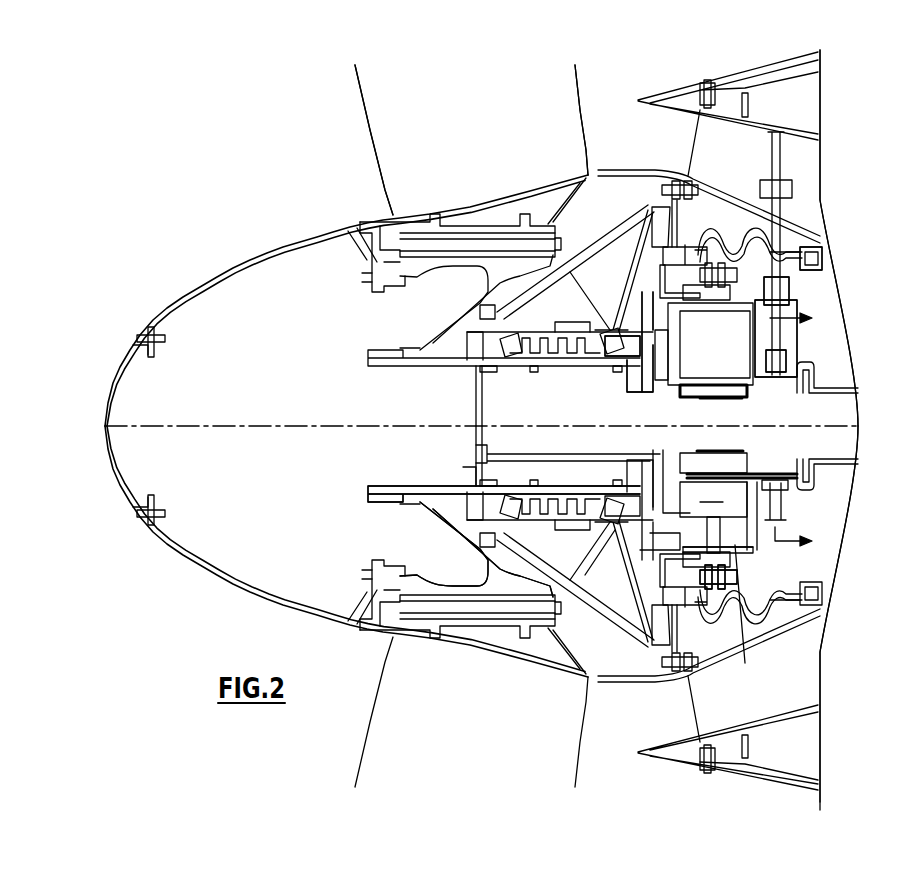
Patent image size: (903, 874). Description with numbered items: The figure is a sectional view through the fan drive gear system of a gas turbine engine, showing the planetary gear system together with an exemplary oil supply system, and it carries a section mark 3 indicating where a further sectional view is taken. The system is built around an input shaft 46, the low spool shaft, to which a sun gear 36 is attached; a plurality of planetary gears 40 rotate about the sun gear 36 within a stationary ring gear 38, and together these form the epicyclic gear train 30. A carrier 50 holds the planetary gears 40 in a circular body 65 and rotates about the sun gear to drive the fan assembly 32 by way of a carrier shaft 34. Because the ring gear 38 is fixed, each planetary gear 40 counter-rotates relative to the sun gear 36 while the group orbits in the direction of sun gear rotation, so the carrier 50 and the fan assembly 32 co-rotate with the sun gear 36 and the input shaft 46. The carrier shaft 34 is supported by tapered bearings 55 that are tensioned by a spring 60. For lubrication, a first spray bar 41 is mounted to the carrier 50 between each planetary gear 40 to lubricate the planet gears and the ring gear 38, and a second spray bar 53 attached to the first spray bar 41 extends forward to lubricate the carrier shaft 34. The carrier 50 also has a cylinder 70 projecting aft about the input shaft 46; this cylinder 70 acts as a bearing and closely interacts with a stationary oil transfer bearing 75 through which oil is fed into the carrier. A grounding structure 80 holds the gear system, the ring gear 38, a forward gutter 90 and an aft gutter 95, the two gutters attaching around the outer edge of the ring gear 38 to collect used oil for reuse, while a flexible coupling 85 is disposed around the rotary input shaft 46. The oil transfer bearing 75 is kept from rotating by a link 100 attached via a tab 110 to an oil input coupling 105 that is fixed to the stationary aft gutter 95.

The section line 3 is at (797, 431).
The epicyclic gear train 30 is at (648, 406).
The fan assembly 32 is at (480, 160).
The carrier shaft 34 is at (553, 493).
The sun gear 36 is at (700, 460).
The ring gear 38 is at (745, 663).
The planetary gears 40 is at (665, 352).
The first spray bar 41 is at (742, 488).
The input shaft 46 is at (840, 410).
The carrier 50 is at (640, 314).
The second spray bar 53 is at (572, 455).
The tapered bearings 55 is at (490, 562).
The spring 60 is at (551, 528).
The circular body 65 is at (748, 308).
The cylinder 70 is at (800, 460).
The oil transfer bearing 75 is at (795, 352).
The grounding structure 80 is at (642, 210).
The flexible coupling 85 is at (717, 242).
The forward gutter 90 is at (630, 280).
The aft gutter 95 is at (770, 226).
The link 100 is at (818, 338).
The oil input coupling 105 is at (815, 258).
The tab 110 is at (800, 290).